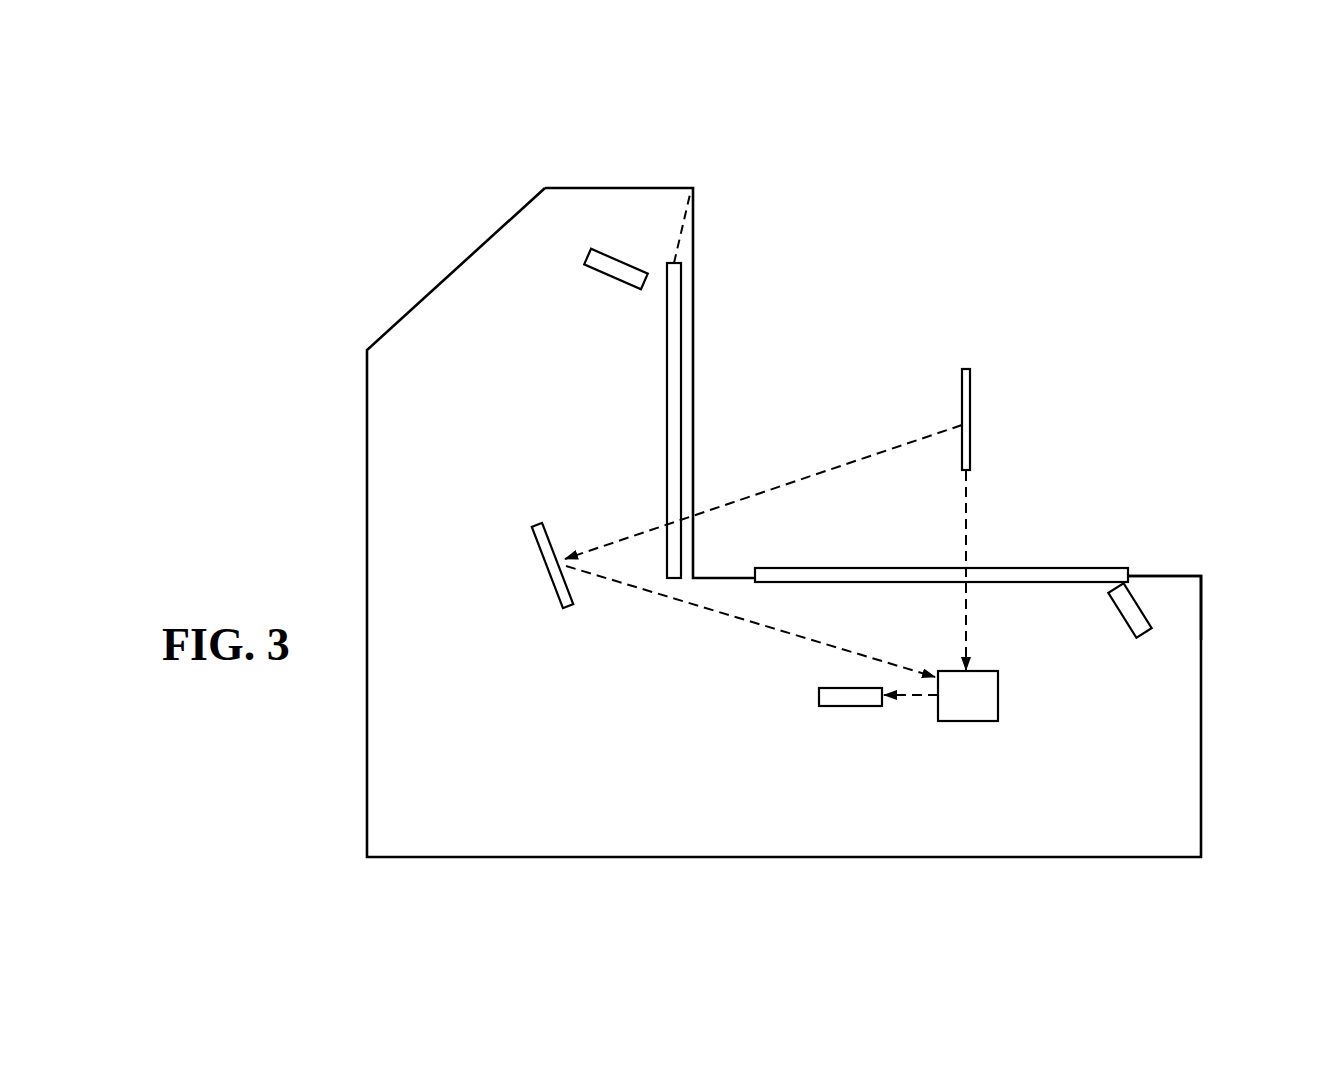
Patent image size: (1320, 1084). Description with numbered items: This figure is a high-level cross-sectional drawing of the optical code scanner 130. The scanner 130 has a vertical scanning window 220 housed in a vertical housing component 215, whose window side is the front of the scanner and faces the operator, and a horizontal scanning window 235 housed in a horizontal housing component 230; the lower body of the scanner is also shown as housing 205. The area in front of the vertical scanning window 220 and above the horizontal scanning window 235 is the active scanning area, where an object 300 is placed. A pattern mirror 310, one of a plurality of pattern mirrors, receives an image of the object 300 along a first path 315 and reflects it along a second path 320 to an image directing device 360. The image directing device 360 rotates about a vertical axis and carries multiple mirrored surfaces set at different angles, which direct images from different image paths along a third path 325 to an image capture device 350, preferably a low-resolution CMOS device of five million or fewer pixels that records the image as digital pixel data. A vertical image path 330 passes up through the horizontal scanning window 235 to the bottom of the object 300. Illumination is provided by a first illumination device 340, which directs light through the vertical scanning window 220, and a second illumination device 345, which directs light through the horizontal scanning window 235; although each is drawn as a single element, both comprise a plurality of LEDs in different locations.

The optical code scanner 130 is at (280, 113).
The housing 205 is at (418, 808).
The vertical housing component 215 is at (660, 188).
The vertical scanning window 220 is at (668, 262).
The horizontal housing component 230 is at (1178, 575).
The horizontal scanning window 235 is at (1062, 567).
The object 300 is at (972, 390).
The pattern mirror 310 is at (541, 557).
The first path 315 is at (790, 486).
The second path 320 is at (716, 618).
The third path 325 is at (899, 702).
The vertical image path 330 is at (967, 598).
The first illumination device 340 is at (608, 278).
The second illumination device 345 is at (1147, 614).
The image capture device 350 is at (847, 706).
The image directing device 360 is at (998, 690).